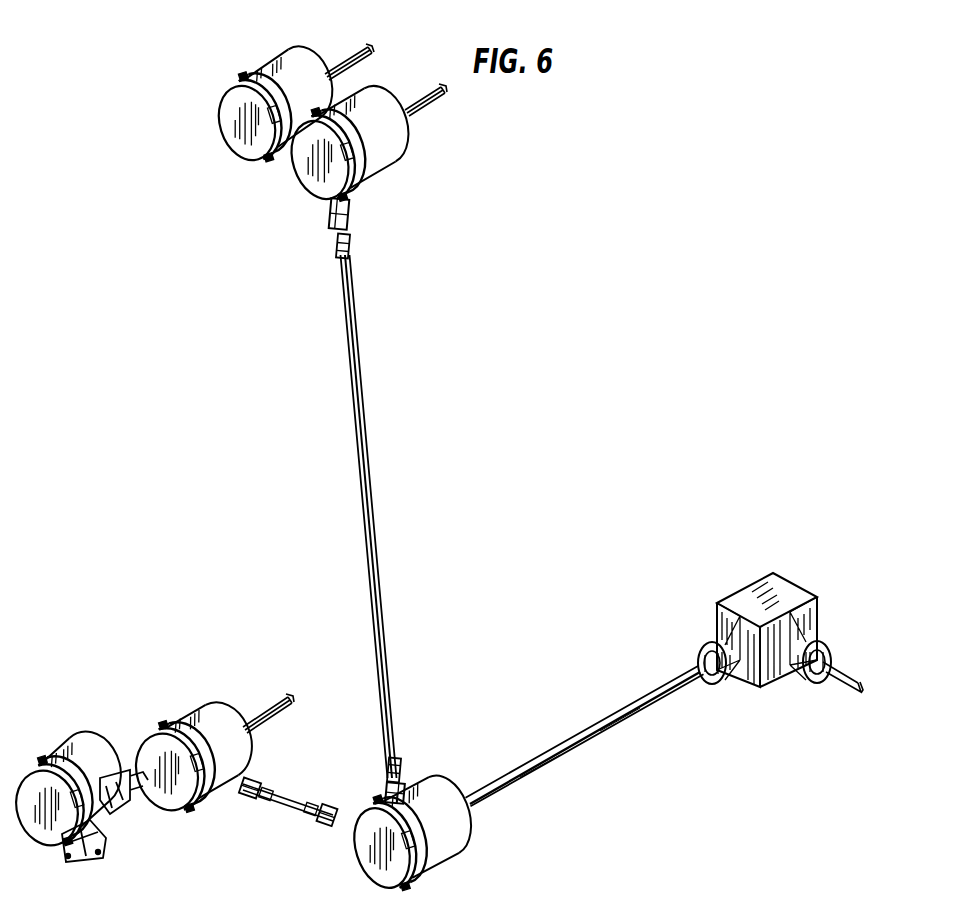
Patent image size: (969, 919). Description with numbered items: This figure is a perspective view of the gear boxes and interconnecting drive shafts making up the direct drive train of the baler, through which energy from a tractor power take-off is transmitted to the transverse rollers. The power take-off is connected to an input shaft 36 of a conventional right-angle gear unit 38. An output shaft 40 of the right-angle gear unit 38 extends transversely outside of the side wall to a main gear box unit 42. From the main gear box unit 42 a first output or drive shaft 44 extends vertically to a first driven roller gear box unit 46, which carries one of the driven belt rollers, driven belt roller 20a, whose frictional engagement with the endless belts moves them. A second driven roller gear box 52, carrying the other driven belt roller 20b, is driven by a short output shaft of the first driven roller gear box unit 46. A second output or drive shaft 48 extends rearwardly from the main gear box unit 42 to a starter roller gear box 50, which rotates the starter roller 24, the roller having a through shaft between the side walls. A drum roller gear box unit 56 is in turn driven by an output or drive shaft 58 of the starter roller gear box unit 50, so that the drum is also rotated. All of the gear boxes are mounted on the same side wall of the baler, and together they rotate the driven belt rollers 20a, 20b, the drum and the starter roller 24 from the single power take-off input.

The driven belt roller 20a is at (372, 58).
The driven belt roller 20b is at (440, 99).
The starter roller 24 is at (267, 712).
The input shaft 36 is at (837, 683).
The right-angle gear unit 38 is at (750, 593).
The output shaft 40 is at (563, 740).
The main gear box unit 42 is at (453, 850).
The first output or drive shaft 44 is at (372, 473).
The first driven roller gear box unit 46 is at (397, 167).
The second output or drive shaft 48 is at (282, 802).
The starter roller gear box 50 is at (187, 717).
The second driven roller gear box 52 is at (237, 140).
The drum roller gear box unit 56 is at (53, 757).
The output or drive shaft 58 is at (115, 772).